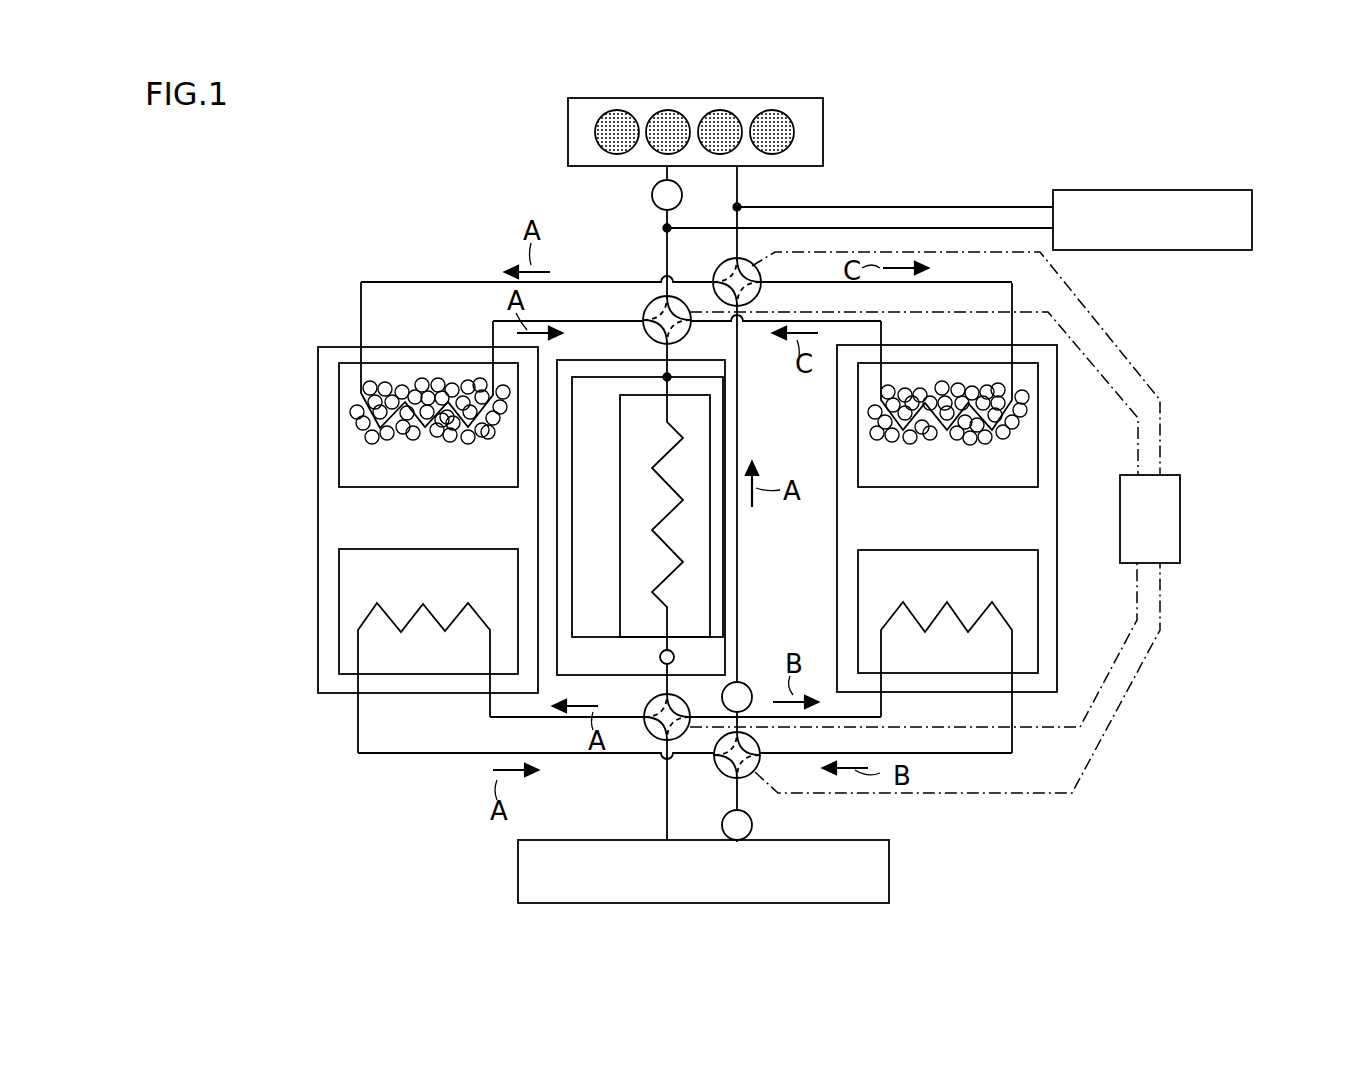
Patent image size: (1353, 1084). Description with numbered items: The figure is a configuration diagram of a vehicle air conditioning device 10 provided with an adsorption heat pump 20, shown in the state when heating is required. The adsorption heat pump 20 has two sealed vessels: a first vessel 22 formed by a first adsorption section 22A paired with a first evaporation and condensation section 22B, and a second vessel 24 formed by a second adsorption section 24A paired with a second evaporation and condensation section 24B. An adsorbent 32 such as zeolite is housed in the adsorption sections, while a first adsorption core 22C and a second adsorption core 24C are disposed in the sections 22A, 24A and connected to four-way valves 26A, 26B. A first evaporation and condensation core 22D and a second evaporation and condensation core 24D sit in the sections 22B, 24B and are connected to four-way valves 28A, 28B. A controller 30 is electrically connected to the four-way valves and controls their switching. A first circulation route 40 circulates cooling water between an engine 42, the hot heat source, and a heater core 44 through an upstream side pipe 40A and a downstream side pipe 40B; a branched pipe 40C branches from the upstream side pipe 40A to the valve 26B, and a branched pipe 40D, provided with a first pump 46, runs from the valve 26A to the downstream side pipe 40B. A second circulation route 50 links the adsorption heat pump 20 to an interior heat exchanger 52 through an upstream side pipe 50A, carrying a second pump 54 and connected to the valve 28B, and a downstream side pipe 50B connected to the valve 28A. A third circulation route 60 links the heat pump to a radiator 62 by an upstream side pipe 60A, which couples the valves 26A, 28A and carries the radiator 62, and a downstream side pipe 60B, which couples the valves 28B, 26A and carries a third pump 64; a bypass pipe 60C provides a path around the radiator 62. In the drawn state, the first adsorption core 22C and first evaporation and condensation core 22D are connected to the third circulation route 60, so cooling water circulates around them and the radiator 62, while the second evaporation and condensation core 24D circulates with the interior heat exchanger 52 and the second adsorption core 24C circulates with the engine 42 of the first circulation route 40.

The vehicle air conditioning device 10 is at (322, 232).
The adsorption heat pump 20 is at (298, 515).
The first vessel 22 is at (318, 630).
The first adsorption section 22A is at (339, 432).
The first evaporation and condensation section 22B is at (339, 588).
The first adsorption core 22C is at (395, 428).
The first evaporation and condensation core 22D is at (418, 605).
The second vessel 24 is at (1057, 470).
The second adsorption section 24A is at (1038, 440).
The second evaporation and condensation section 24B is at (1038, 606).
The second adsorption core 24C is at (942, 428).
The second evaporation and condensation core 24D is at (960, 605).
The four-way valve 26A is at (648, 307).
The four-way valve 26B is at (715, 272).
The four-way valve 28A is at (645, 705).
The four-way valve 28B is at (720, 768).
The controller 30 is at (1167, 565).
The adsorbent 32 is at (355, 408).
The first circulation route 40 is at (927, 186).
The upstream side pipe 40A is at (881, 206).
The downstream side pipe 40B is at (984, 227).
The branched pipe 40C is at (733, 216).
The branched pipe 40D is at (665, 262).
The engine 42 is at (568, 130).
The heater core 44 is at (1160, 190).
The first pump 46 is at (652, 194).
The second circulation route 50 is at (637, 826).
The upstream side pipe 50A is at (740, 830).
The downstream side pipe 50B is at (665, 793).
The interior heat exchanger 52 is at (889, 873).
The second pump 54 is at (752, 808).
The third circulation route 60 is at (748, 438).
The upstream side pipe 60A is at (664, 354).
The downstream side pipe 60B is at (740, 598).
The bypass pipe 60C is at (572, 522).
The radiator 62 is at (710, 543).
The third pump 64 is at (745, 684).